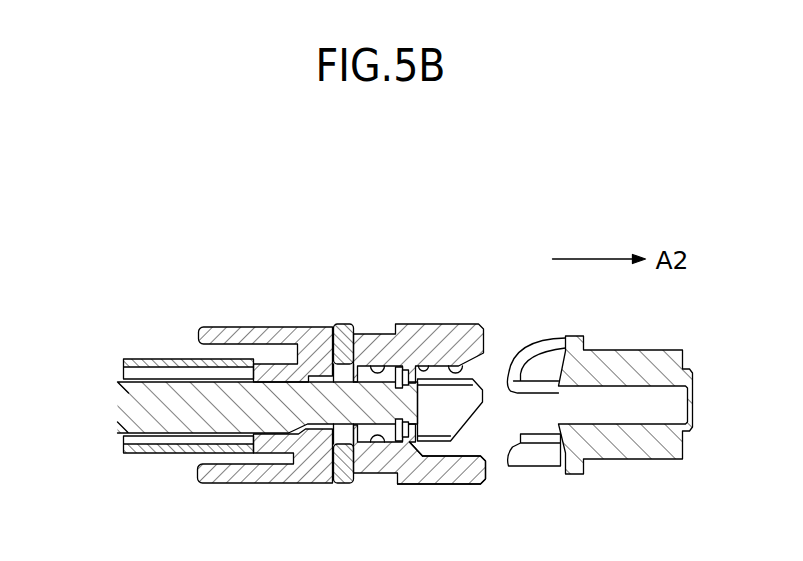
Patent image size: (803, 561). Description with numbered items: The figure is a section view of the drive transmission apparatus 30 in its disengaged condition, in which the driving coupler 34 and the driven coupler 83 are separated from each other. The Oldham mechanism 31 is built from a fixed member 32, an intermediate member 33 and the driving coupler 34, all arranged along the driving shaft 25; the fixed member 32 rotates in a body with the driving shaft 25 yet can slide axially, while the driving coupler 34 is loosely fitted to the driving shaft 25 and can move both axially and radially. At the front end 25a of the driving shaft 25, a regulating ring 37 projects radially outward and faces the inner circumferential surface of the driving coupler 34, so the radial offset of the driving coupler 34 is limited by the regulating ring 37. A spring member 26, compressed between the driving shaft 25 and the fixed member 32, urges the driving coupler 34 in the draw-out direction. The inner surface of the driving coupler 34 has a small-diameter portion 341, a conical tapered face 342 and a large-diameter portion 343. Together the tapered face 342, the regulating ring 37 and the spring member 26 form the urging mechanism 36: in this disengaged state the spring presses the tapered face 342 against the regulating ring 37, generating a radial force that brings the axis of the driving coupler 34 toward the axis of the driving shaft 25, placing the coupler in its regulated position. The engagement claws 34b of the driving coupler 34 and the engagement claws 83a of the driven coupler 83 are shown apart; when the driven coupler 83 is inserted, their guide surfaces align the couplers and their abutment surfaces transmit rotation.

The driving shaft 25 is at (130, 403).
The front end of the driving shaft 25a is at (392, 438).
The spring member 26 is at (155, 452).
The drive transmission apparatus 30 is at (373, 260).
The Oldham mechanism 31 is at (213, 325).
The fixed member 32 is at (264, 483).
The intermediate member 33 is at (343, 486).
The driving coupler 34 is at (383, 481).
The small-diameter portion 341 is at (391, 362).
The tapered face 342 is at (423, 358).
The large-diameter portion 343 is at (457, 356).
The engagement claw 34b is at (486, 481).
The urging mechanism 36 is at (140, 357).
The regulating ring 37 is at (423, 447).
The driven coupler 83 is at (599, 441).
The engagement claw 83a is at (533, 463).